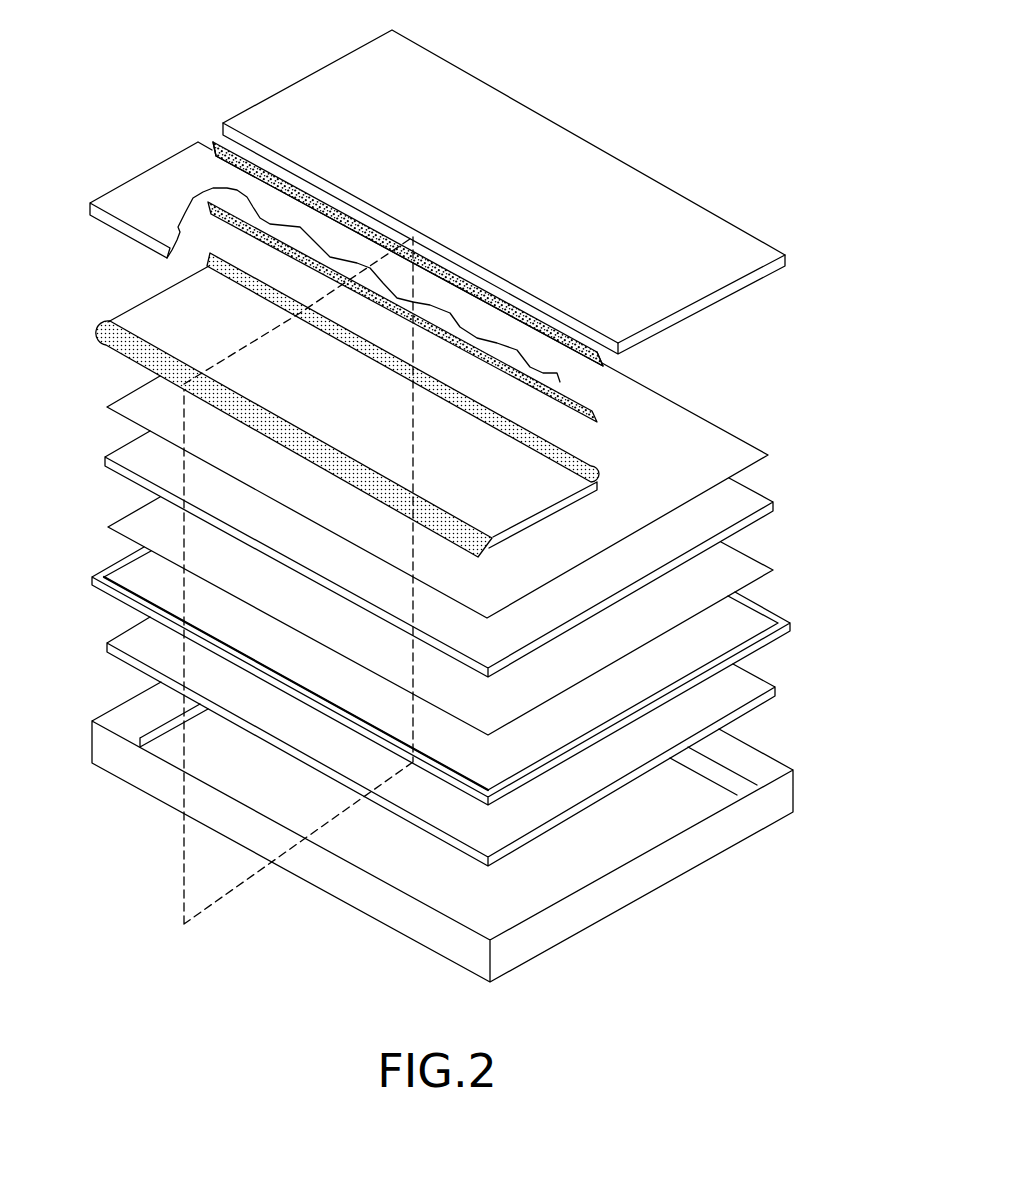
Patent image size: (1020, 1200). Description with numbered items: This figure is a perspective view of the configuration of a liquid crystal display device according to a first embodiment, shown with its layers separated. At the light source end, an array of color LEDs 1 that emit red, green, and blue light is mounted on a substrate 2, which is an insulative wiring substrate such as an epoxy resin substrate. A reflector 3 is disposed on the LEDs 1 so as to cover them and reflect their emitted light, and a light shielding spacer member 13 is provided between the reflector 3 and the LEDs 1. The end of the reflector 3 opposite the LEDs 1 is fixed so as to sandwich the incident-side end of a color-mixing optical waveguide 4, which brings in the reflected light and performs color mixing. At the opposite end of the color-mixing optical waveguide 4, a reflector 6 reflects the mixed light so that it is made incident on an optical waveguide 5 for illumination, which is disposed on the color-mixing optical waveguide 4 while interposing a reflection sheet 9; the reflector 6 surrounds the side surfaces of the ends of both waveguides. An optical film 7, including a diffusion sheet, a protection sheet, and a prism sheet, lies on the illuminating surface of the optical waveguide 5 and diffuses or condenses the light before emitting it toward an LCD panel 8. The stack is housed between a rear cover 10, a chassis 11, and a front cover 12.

The color LEDs 1 is at (255, 157).
The substrate 2 is at (215, 143).
The reflector 3 is at (595, 470).
The color-mixing optical waveguide 4 is at (150, 322).
The optical waveguide for illumination 5 is at (752, 503).
The reflector 6 is at (100, 362).
The optical film 7 is at (753, 570).
The LCD panel 8 is at (758, 688).
The reflection sheet 9 is at (713, 448).
The rear cover 10 is at (140, 183).
The chassis 11 is at (793, 612).
The front cover 12 is at (790, 763).
The light shielding spacer member 13 is at (560, 383).